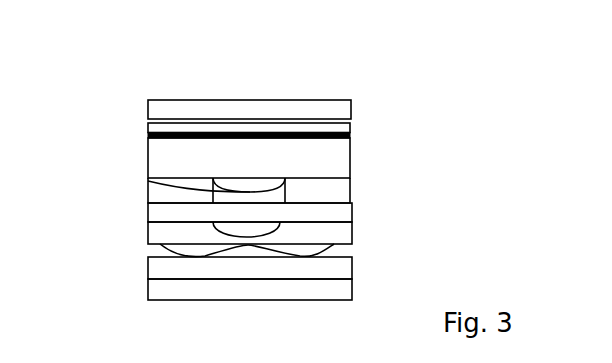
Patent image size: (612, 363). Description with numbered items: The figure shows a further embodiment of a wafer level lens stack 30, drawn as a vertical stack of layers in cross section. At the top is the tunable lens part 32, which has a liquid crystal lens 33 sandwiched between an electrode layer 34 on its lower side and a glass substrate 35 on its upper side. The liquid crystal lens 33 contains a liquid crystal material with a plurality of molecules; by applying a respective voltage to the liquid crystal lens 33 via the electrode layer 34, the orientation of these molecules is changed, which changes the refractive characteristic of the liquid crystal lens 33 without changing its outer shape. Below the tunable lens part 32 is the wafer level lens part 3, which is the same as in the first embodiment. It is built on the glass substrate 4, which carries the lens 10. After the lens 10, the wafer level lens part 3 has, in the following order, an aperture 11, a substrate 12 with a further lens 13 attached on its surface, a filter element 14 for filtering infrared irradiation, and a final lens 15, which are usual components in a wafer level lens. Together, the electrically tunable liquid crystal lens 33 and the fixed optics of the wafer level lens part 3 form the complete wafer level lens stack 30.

The wafer level lens part 3 is at (442, 206).
The glass substrate 4 is at (148, 159).
The lens 10 is at (148, 181).
The aperture 11 is at (148, 197).
The substrate 12 is at (148, 212).
The further lens 13 is at (148, 235).
The filter element 14 is at (148, 268).
The final lens 15 is at (148, 291).
The wafer level lens stack 30 is at (440, 114).
The tunable lens part 32 is at (442, 145).
The liquid crystal lens 33 is at (148, 128).
The electrode layer 34 is at (148, 135).
The glass substrate 35 is at (148, 113).